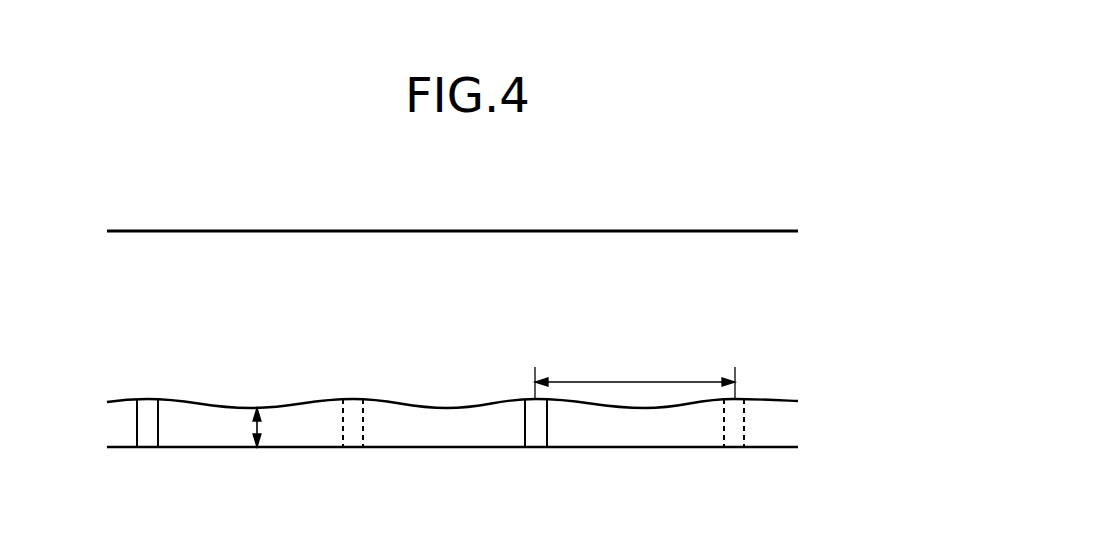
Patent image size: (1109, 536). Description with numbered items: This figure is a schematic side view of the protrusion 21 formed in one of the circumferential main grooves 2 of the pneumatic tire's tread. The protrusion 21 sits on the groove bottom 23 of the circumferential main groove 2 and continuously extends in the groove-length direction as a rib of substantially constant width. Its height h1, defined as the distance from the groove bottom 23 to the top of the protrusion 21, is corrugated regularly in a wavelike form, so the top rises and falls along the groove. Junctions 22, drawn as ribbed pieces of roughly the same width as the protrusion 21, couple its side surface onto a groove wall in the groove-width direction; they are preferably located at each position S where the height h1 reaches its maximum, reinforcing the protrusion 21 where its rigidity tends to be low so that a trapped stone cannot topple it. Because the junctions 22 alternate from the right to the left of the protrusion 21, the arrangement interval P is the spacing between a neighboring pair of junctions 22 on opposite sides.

The circumferential main groove 2 is at (766, 231).
The protrusion 21 is at (763, 399).
The junction 22 is at (143, 447).
The groove bottom 23 is at (786, 447).
The position at which the height of the protrusion reaches its maximum S is at (143, 399).
The arrangement interval between the junctions P is at (635, 375).
The height of the protrusion h1 is at (275, 427).